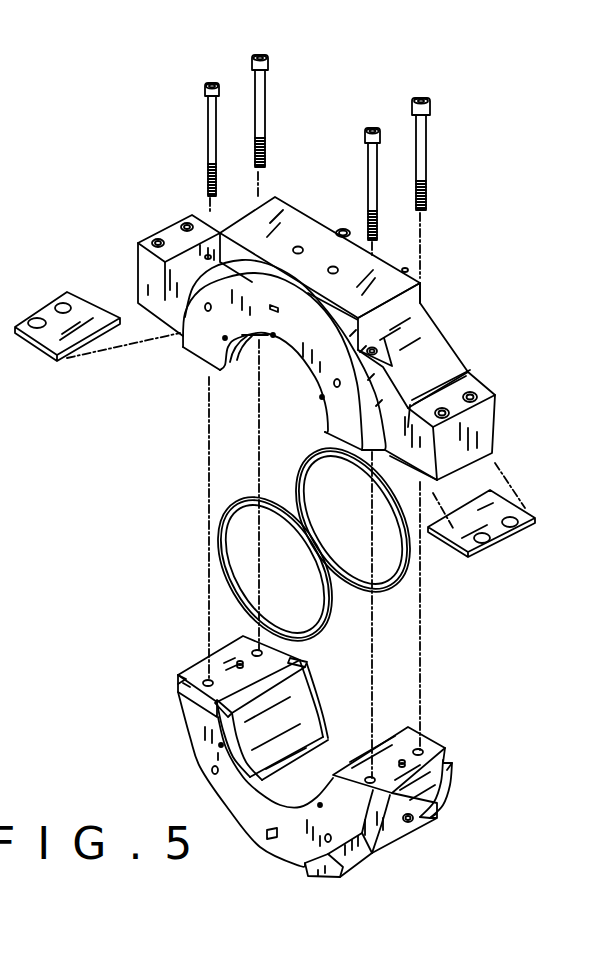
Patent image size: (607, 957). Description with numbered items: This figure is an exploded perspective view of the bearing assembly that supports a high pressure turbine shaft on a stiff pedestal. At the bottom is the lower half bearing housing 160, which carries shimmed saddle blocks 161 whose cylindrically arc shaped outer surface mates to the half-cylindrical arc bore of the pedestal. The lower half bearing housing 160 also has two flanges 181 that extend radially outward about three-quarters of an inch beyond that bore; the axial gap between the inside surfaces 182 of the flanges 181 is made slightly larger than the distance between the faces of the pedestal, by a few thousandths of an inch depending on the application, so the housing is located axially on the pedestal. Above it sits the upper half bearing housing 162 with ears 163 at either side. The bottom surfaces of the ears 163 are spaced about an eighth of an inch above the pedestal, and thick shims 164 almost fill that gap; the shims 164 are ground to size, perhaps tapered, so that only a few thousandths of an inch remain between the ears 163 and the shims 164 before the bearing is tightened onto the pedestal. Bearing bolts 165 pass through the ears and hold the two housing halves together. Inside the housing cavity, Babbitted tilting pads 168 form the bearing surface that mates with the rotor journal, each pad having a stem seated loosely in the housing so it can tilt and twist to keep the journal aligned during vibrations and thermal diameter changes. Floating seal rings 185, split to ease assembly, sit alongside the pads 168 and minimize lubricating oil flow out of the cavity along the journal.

The lower half bearing housing 160 is at (192, 713).
The shimmed saddle block 161 is at (372, 856).
The upper half bearing housing 162 is at (447, 337).
The ear 163 is at (175, 228).
The shim 164 is at (80, 302).
The bearing bolt 165 is at (208, 147).
The Babbitted tilting pad 168 is at (293, 710).
The flange 181 is at (237, 638).
The inside surface of the flange 182 is at (187, 673).
The floating seal ring 185 is at (300, 463).